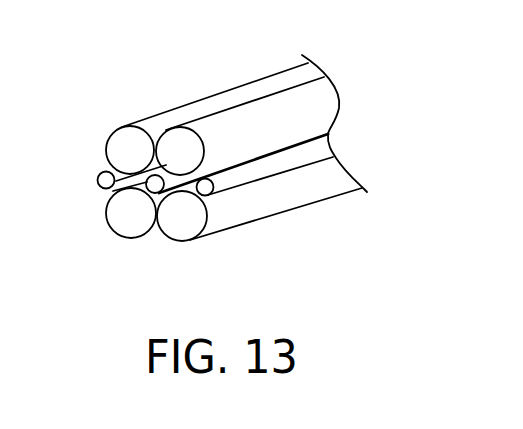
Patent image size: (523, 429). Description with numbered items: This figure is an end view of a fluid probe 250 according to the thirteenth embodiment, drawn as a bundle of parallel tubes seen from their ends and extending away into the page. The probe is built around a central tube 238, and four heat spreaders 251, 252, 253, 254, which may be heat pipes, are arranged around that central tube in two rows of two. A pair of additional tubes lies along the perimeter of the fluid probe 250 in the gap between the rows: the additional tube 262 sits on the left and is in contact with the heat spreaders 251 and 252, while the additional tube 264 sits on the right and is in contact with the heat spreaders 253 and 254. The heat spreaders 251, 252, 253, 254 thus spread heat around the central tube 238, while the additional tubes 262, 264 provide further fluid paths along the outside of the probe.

The fluid probe 250 is at (143, 90).
The heat spreader 251 is at (130, 148).
The heat spreader 252 is at (127, 216).
The heat spreader 253 is at (178, 148).
The heat spreader 254 is at (282, 188).
The additional tube 262 is at (107, 181).
The central tube 238 is at (155, 186).
The additional tube 264 is at (268, 167).